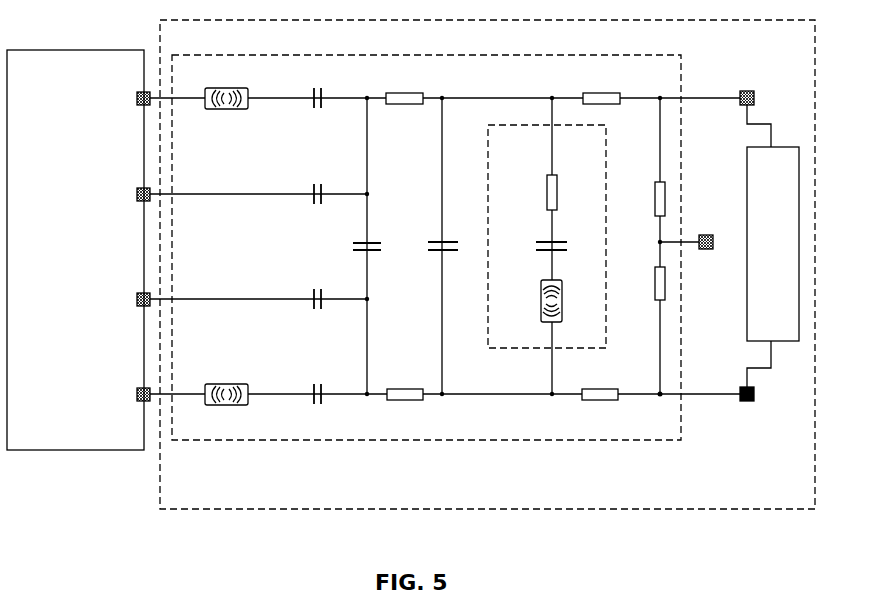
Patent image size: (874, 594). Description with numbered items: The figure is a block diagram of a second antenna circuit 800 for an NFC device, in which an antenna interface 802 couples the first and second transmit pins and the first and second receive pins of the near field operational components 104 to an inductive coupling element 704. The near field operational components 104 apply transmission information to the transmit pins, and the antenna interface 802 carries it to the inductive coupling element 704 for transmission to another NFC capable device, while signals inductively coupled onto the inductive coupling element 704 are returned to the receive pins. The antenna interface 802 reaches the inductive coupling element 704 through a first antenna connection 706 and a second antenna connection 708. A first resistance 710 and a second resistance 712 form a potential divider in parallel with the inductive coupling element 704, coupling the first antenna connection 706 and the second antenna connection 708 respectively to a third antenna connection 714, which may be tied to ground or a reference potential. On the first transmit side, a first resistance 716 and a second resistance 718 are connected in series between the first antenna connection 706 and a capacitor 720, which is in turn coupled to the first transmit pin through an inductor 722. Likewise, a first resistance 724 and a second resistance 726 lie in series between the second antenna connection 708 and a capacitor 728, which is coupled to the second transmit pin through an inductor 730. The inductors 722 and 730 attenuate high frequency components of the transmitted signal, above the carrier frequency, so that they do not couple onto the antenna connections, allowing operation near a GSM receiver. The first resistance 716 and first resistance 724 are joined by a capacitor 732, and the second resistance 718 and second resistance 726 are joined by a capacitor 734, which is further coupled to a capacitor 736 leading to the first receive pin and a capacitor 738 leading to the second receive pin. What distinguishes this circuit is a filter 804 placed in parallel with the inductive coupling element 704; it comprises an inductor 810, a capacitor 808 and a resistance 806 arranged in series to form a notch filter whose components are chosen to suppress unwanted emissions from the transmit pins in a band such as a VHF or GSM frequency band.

The near field operational components 104 is at (78, 50).
The inductive coupling element 704 is at (775, 147).
The first antenna connection 706 is at (742, 90).
The second antenna connection 708 is at (744, 402).
The first resistance 710 is at (654, 195).
The second resistance 712 is at (655, 284).
The third antenna connection 714 is at (706, 250).
The first resistance 716 is at (600, 92).
The second resistance 718 is at (402, 92).
The capacitor 720 is at (308, 104).
The inductor 722 is at (228, 110).
The first resistance 724 is at (600, 400).
The second resistance 726 is at (402, 400).
The capacitor 728 is at (312, 406).
The inductor 730 is at (240, 406).
The capacitor 732 is at (435, 252).
The capacitor 734 is at (372, 242).
The capacitor 736 is at (312, 204).
The capacitor 738 is at (312, 308).
The antenna circuit 800 is at (611, 509).
The antenna interface 802 is at (352, 440).
The filter 804 is at (488, 167).
The resistance 806 is at (547, 186).
The capacitor 808 is at (545, 240).
The inductor 810 is at (540, 292).